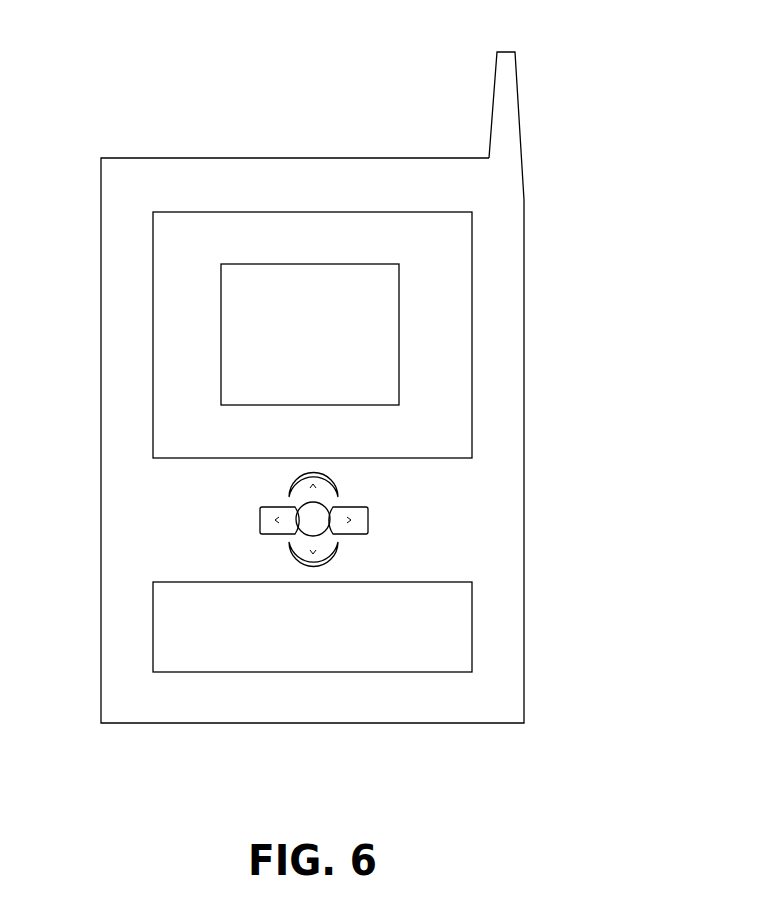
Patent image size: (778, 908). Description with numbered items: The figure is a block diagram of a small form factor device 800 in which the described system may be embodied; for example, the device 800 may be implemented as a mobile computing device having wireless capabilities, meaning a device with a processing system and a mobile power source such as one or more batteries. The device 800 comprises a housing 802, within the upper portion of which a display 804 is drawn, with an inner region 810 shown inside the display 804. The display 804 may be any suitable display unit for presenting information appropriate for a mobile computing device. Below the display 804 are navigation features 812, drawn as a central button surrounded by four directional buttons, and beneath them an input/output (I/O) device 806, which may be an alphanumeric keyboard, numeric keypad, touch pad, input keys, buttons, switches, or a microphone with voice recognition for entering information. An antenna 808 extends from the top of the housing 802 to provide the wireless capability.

The small form factor device 800 is at (112, 65).
The housing 802 is at (524, 440).
The display 804 is at (472, 228).
The input/output (I/O) device 806 is at (472, 617).
The antenna 808 is at (490, 98).
The display screen 810 is at (399, 353).
The navigation features 812 is at (396, 509).